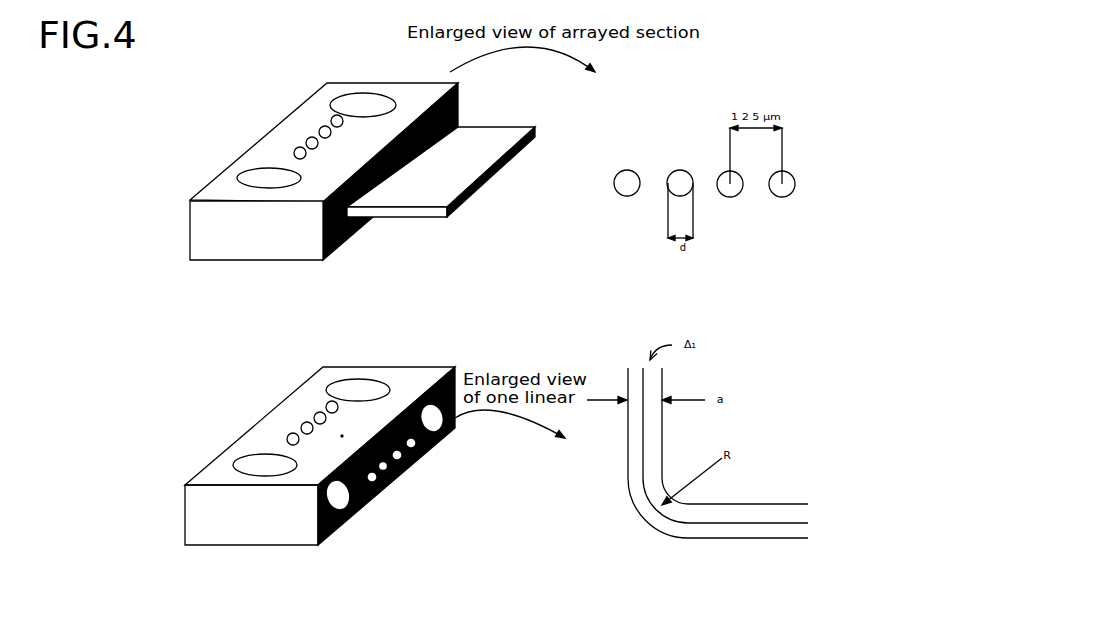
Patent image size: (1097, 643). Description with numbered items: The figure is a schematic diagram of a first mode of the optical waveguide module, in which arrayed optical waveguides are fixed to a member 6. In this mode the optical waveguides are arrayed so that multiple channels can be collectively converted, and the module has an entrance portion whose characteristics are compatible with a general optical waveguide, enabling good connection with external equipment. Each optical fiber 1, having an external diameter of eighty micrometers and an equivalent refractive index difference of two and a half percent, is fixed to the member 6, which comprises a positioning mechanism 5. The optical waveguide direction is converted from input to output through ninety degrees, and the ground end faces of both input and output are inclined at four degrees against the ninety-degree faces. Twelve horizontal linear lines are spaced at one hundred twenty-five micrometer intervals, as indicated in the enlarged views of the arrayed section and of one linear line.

The optical fiber 1 is at (362, 155).
The positioning mechanism 5 is at (365, 105).
The member 6 is at (248, 238).